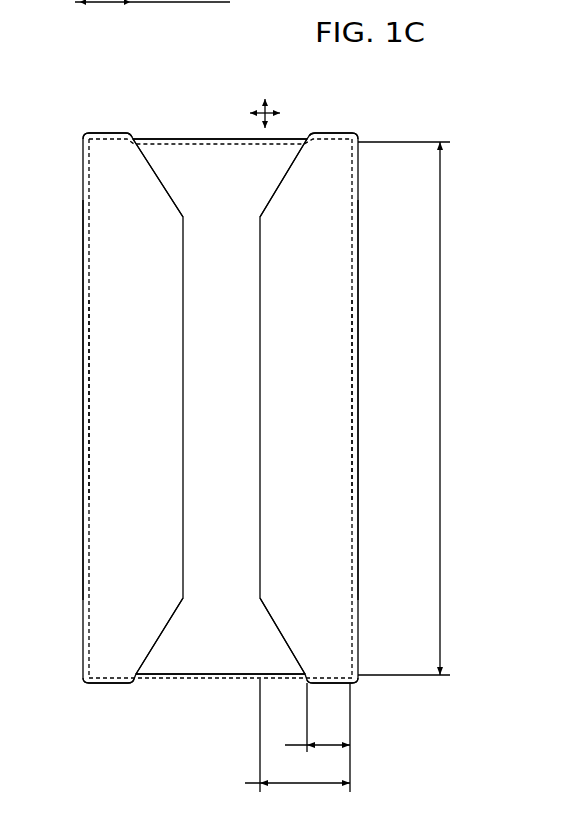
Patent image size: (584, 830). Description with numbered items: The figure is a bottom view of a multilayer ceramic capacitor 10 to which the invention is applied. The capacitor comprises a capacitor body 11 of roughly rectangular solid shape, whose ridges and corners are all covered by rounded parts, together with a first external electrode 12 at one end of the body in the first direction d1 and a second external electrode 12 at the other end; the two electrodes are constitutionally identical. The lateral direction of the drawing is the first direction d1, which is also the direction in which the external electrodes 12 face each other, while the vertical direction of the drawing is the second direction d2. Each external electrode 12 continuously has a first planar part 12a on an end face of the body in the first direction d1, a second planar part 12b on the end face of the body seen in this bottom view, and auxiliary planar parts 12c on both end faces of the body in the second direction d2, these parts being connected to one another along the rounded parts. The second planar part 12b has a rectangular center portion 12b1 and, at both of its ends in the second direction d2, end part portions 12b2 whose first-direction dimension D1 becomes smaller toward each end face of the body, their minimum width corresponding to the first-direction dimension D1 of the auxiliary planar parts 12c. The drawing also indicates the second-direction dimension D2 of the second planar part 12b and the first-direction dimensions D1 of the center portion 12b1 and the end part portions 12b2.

The multilayer ceramic capacitor 10 is at (76, 124).
The capacitor body 11 is at (218, 139).
The external electrode 12 is at (83, 405).
The first planar part 12a is at (83, 272).
The second planar part 12b is at (125, 336).
The auxiliary planar part 12c is at (112, 133).
The center portion 12b1 is at (221, 406).
The end part portion 12b2 is at (221, 406).
The first direction d1 is at (278, 115).
The second direction d2 is at (265, 102).
The first-direction dimension D1 is at (347, 735).
The second-direction dimension D2 is at (414, 408).